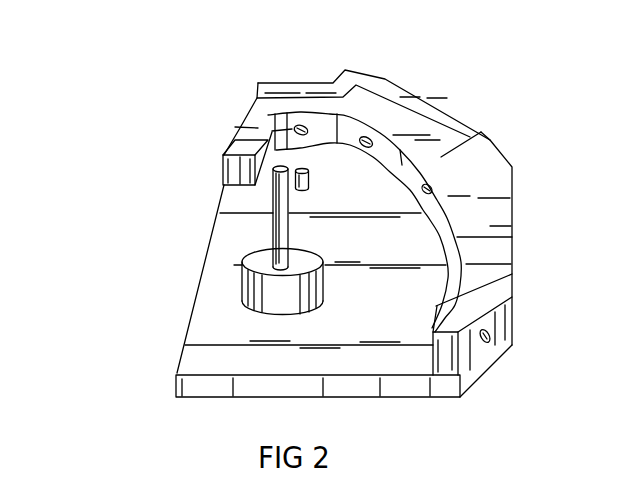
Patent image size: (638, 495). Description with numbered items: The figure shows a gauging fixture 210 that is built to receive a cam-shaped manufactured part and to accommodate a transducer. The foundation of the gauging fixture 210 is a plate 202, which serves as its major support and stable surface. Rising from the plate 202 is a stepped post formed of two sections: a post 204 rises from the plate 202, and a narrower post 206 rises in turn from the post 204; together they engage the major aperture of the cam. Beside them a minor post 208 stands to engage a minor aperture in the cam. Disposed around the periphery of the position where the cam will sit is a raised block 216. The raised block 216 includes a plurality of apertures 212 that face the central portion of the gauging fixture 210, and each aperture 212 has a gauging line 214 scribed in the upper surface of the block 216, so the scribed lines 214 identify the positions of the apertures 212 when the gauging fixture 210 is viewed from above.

The plate 202 is at (215, 337).
The post 204 is at (248, 290).
The post 206 is at (272, 213).
The minor post 208 is at (308, 176).
The gauging fixture 210 is at (157, 153).
The apertures 212 is at (420, 187).
The gauging lines 214 is at (250, 132).
The raised block 216 is at (492, 170).